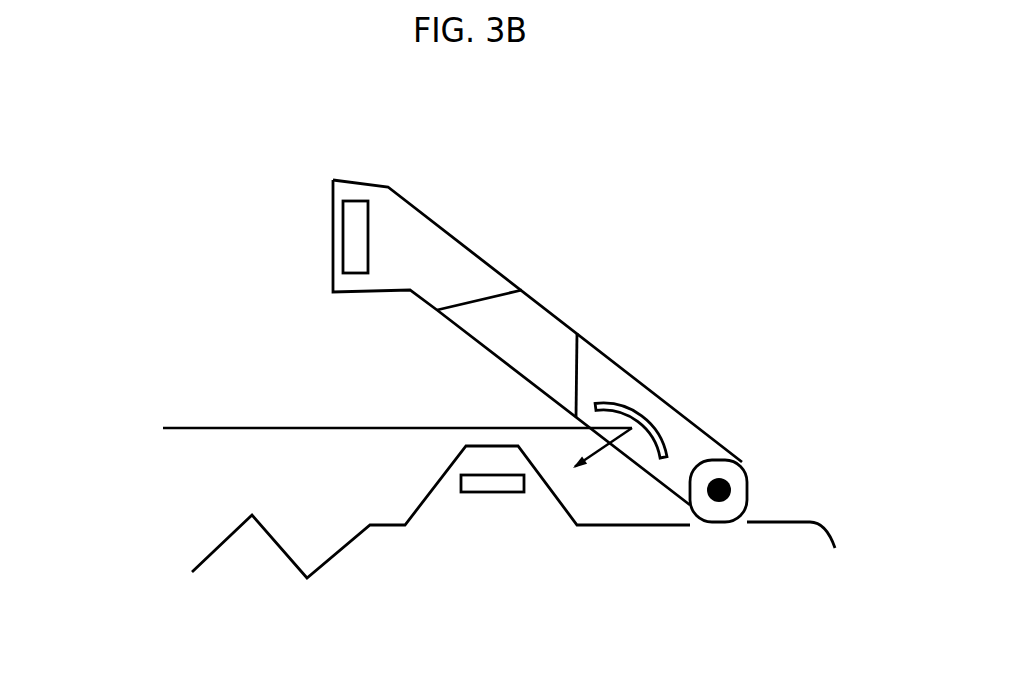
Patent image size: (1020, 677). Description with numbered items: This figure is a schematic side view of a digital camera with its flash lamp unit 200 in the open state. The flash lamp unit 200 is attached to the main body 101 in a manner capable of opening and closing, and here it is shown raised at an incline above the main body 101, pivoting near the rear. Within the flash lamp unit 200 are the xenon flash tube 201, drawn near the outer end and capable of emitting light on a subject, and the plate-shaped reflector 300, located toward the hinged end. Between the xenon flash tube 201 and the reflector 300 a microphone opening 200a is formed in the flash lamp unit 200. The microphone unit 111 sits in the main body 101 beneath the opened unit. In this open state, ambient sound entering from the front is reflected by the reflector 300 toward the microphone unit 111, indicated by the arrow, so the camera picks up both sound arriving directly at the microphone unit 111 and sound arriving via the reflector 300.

The main body 101 is at (207, 557).
The microphone unit 111 is at (495, 493).
The flash lamp unit 200 is at (458, 262).
The microphone opening 200a is at (523, 312).
The xenon flash tube 201 is at (352, 200).
The reflector 300 is at (645, 432).